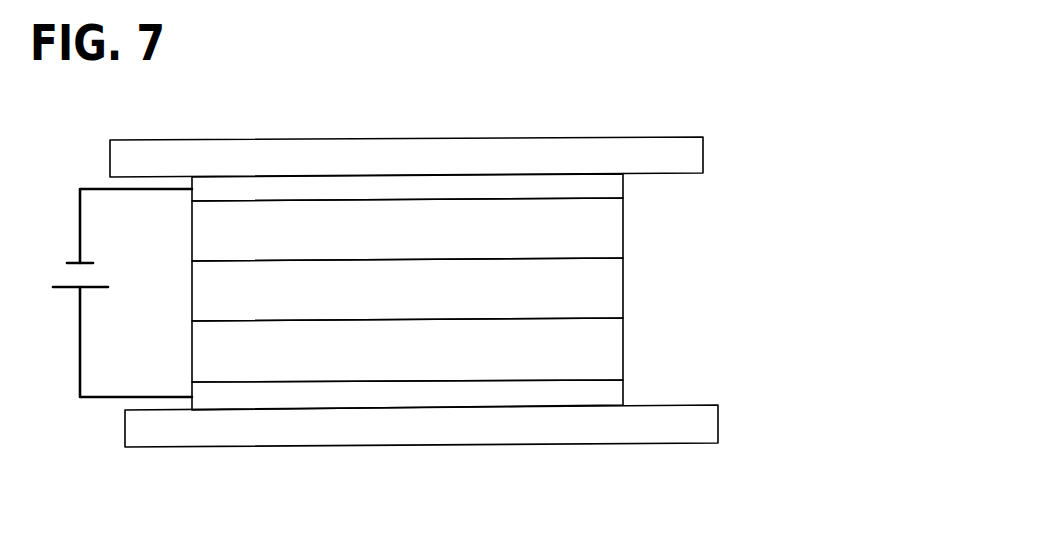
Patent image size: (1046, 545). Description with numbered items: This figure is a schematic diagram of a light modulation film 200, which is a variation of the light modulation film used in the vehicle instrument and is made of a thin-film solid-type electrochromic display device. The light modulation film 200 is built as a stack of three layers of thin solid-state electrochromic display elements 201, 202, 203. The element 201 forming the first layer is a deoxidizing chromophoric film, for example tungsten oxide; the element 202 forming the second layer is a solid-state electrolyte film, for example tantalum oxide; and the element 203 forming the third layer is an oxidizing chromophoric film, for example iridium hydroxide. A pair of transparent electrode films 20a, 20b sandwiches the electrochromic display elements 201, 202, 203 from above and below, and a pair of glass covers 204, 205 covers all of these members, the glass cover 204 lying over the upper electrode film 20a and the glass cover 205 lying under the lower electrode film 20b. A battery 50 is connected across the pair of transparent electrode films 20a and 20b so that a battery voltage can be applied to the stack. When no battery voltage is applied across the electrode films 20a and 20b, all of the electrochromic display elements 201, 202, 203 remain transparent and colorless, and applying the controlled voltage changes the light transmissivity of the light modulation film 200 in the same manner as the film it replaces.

The light modulation film 200 is at (435, 286).
The glass cover 204 is at (615, 150).
The glass cover 205 is at (645, 432).
The transparent electrode film 20a is at (602, 187).
The thin solid-state electrochromic display element 201 is at (602, 240).
The thin solid-state electrochromic display element 202 is at (602, 288).
The thin solid-state electrochromic display element 203 is at (602, 338).
The transparent electrode film 20b is at (602, 390).
The battery 50 is at (103, 272).